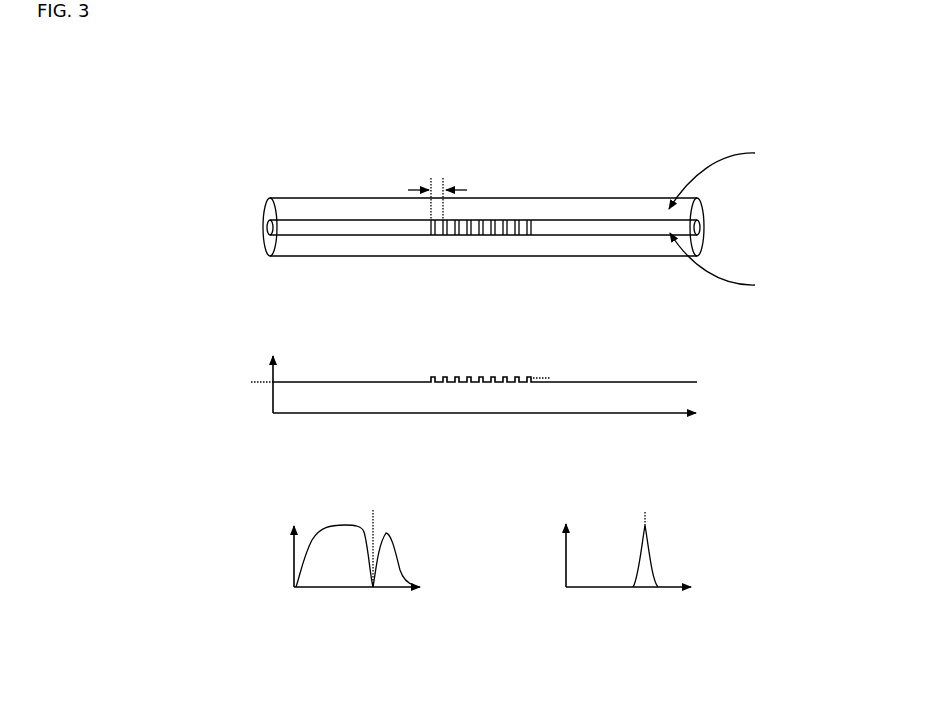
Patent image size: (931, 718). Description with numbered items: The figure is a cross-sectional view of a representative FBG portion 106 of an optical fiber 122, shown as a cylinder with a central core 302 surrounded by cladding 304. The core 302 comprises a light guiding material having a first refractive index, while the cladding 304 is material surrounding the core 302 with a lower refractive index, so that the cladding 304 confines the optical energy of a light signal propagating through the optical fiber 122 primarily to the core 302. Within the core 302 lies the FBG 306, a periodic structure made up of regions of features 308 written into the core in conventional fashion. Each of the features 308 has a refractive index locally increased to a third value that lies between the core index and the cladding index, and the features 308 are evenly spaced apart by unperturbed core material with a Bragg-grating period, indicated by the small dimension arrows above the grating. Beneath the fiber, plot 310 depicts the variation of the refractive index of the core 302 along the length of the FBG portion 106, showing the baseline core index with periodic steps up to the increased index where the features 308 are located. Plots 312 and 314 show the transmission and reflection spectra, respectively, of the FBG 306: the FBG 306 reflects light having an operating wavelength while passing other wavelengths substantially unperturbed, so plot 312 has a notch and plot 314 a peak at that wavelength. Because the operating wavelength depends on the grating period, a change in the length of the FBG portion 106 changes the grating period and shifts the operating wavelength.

The FBG portion 106 is at (233, 164).
The optical fiber 122 is at (364, 190).
The core 302 is at (308, 226).
The cladding 304 is at (624, 206).
The FBG 306 is at (517, 241).
The features 308 is at (534, 226).
The plot 310 is at (219, 339).
The plot 312 is at (259, 531).
The plot 314 is at (521, 531).